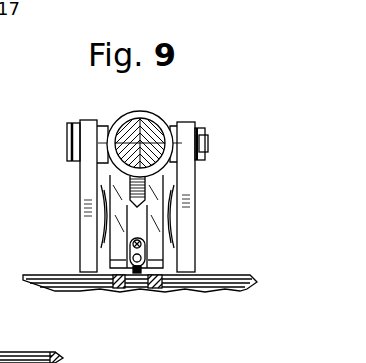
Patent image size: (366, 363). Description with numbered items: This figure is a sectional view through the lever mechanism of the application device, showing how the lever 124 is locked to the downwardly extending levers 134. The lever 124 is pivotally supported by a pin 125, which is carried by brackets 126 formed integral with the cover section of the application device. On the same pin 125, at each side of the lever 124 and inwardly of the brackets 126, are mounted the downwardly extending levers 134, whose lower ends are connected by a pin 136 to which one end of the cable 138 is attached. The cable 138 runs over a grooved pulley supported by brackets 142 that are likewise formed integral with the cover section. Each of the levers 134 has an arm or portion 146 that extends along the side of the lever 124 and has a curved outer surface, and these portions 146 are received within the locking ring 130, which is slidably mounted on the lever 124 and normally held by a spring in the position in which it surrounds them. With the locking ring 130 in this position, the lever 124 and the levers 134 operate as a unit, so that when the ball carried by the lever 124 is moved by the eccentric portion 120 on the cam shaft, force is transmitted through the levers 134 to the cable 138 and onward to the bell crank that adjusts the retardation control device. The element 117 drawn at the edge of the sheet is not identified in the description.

The inner frame 120 is at (167, 186).
The ball 124 is at (129, 113).
The bolt 125 is at (72, 130).
The side post 126 is at (86, 213).
The core 130 is at (150, 111).
The curved surface 134 is at (170, 204).
The cross piece 136 is at (149, 260).
The pin 138 is at (131, 246).
The rivet 142 is at (120, 290).
The collar 146 is at (80, 150).
The plate 117 is at (22, 352).